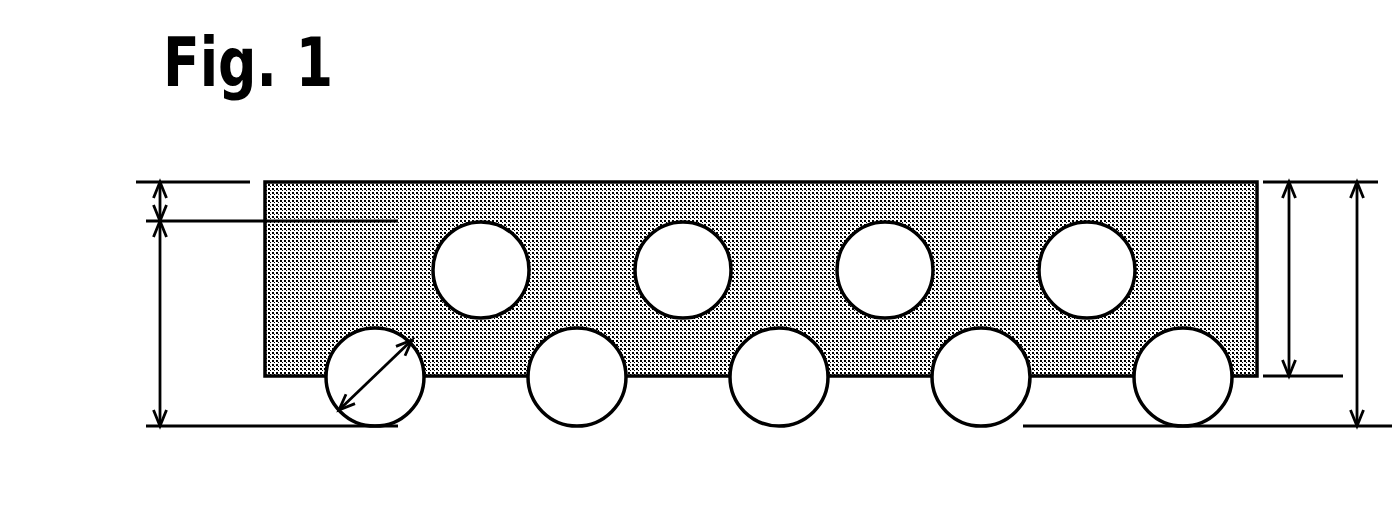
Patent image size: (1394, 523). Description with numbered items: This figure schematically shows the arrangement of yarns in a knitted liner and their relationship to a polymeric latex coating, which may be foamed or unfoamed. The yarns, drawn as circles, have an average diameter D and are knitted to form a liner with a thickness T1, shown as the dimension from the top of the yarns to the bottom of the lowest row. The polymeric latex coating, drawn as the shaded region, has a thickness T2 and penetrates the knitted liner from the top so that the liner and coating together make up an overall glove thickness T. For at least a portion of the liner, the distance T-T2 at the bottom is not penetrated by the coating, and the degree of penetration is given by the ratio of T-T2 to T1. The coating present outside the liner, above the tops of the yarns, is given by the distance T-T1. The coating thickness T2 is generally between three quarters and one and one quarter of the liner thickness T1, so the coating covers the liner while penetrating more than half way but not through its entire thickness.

The polymeric latex coating thickness outside the liner T-T1 is at (267, 202).
The knitted liner thickness T1 is at (272, 323).
The yarn average diameter D is at (375, 375).
The polymeric latex coating thickness T2 is at (1320, 279).
The overall glove thickness T is at (1367, 304).
The unpenetrated liner distance T-T2 is at (1207, 404).